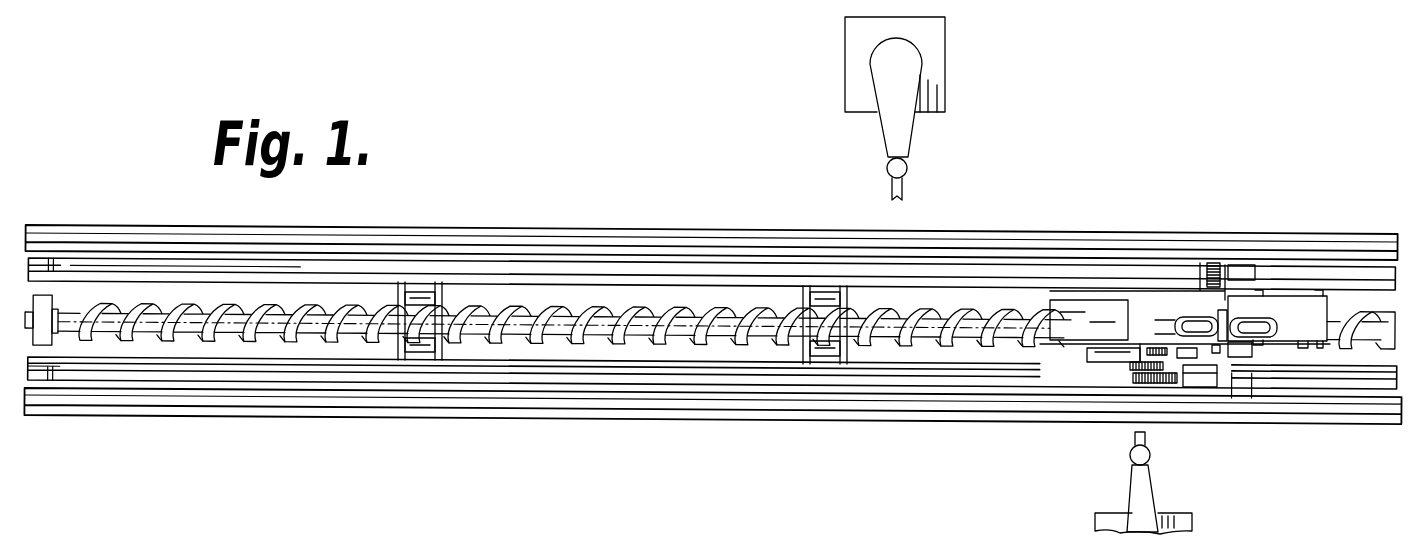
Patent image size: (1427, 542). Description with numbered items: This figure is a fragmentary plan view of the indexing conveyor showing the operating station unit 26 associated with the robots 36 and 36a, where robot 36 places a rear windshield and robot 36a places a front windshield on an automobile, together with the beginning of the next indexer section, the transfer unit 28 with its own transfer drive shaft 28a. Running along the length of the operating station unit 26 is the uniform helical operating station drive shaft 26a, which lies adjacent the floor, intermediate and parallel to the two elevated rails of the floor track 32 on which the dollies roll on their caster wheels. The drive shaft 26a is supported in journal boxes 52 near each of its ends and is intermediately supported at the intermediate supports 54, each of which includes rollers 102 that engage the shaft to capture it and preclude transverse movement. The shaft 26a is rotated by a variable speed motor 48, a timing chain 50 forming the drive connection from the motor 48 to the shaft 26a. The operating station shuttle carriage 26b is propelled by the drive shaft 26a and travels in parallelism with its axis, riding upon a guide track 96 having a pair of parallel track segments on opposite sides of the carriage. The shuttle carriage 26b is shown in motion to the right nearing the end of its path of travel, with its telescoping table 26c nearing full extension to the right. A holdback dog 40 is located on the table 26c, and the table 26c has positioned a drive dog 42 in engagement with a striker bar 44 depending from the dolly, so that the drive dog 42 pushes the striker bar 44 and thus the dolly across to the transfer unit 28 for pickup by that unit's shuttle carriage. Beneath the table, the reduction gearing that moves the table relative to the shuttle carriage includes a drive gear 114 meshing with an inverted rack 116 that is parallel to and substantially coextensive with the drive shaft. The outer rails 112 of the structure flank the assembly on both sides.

The operating station unit 26 is at (699, 364).
The operating station drive shaft 26a is at (275, 343).
The operating station shuttle carriage 26b is at (1108, 360).
The telescoping table 26c is at (1284, 319).
The transfer unit 28 is at (1361, 398).
The transfer drive shaft 28a is at (1388, 342).
The floor track 32 is at (186, 222).
The robot 36 is at (942, 86).
The robot 36a is at (1178, 515).
The holdback dog 40 is at (1250, 348).
The drive dog 42 is at (1175, 326).
The striker bar 44 is at (1236, 322).
The variable speed motor 48 is at (1209, 266).
The timing chain 50 is at (1223, 280).
The journal boxes 52 is at (50, 300).
The intermediate support 54 is at (623, 323).
The guide track 96 is at (682, 283).
The rollers 102 is at (400, 300).
The outer guide rail 112 is at (712, 323).
The drive gear 114 is at (1162, 384).
The inverted rack 116 is at (1136, 372).